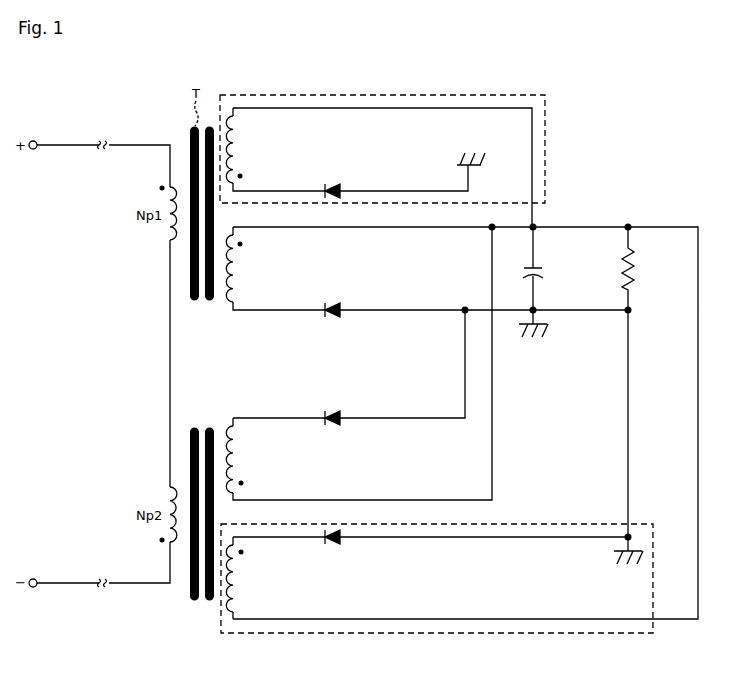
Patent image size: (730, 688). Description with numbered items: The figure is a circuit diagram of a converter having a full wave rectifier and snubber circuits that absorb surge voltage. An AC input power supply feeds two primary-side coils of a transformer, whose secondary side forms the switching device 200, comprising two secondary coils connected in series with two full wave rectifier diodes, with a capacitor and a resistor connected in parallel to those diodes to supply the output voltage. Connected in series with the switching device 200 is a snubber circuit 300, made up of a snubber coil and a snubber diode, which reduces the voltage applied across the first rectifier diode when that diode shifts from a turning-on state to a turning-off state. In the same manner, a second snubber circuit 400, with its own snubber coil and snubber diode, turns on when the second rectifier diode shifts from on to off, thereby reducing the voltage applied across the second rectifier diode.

The switching device 200 is at (254, 312).
The snubber circuit 300 is at (382, 93).
The snubber circuit 400 is at (455, 635).